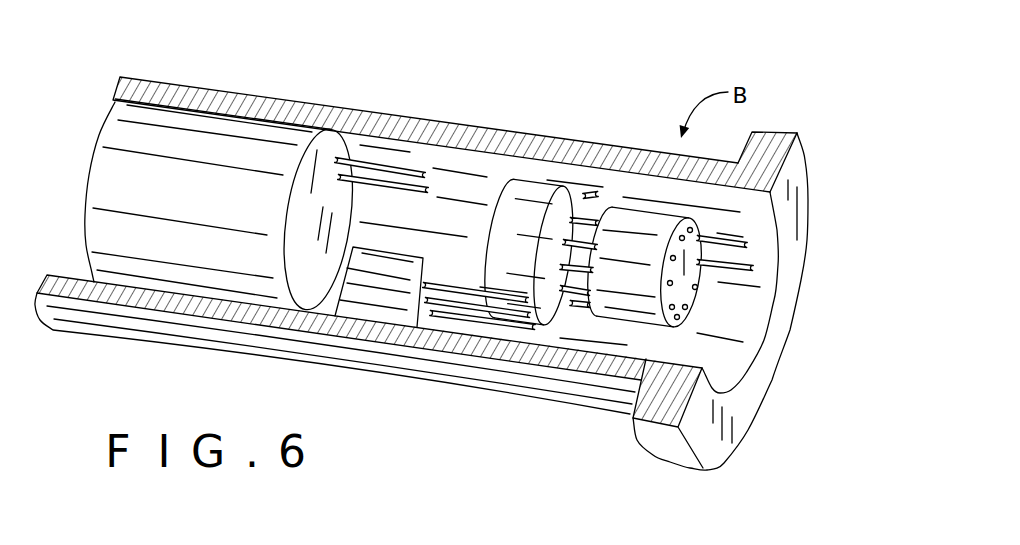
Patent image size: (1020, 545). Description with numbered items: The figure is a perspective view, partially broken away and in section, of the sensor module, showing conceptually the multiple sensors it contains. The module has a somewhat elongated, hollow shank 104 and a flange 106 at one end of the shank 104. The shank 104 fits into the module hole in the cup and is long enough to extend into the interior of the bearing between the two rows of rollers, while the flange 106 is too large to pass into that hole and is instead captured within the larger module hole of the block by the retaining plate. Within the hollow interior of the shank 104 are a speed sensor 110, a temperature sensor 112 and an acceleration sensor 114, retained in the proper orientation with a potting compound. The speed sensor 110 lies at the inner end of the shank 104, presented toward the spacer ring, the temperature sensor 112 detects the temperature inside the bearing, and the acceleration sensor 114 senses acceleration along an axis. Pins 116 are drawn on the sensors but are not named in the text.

The shank 104 is at (163, 327).
The flange 106 is at (661, 438).
The speed sensor 110 is at (200, 143).
The temperature sensor 112 is at (390, 300).
The acceleration sensor 114 is at (537, 205).
The pins 116 is at (383, 162).